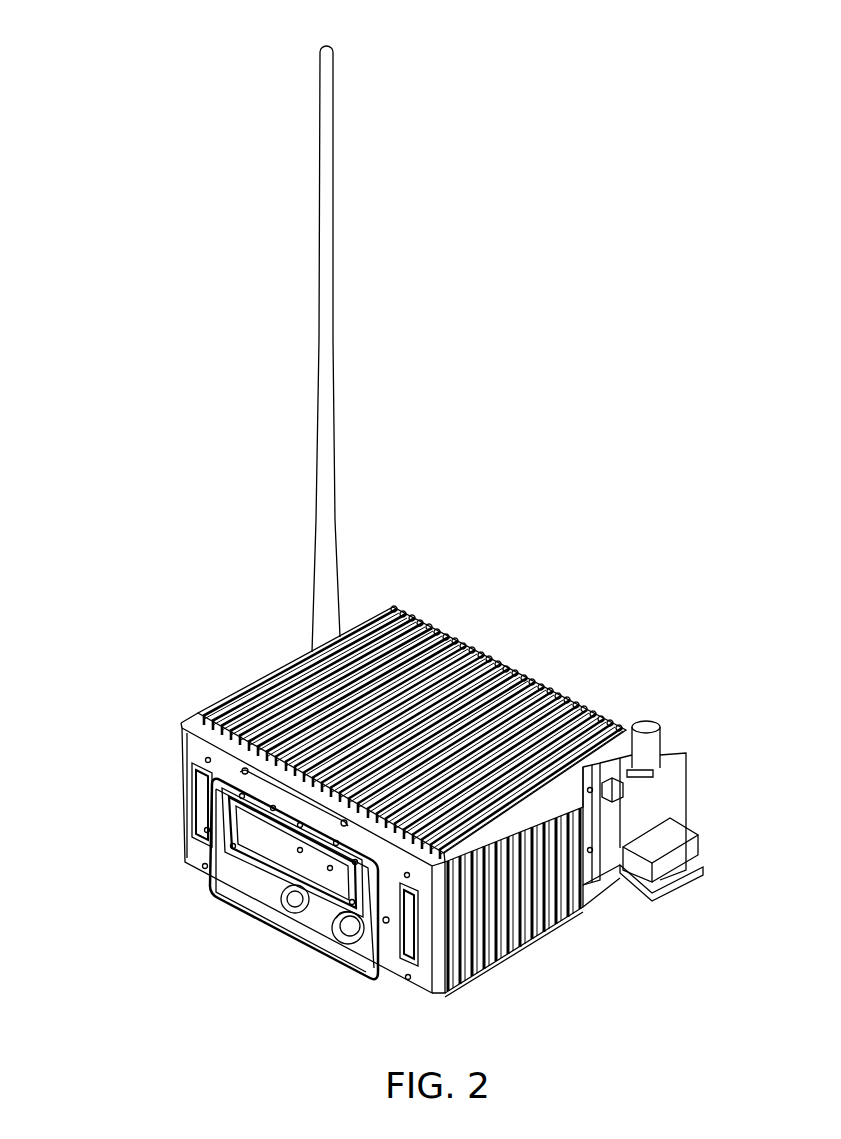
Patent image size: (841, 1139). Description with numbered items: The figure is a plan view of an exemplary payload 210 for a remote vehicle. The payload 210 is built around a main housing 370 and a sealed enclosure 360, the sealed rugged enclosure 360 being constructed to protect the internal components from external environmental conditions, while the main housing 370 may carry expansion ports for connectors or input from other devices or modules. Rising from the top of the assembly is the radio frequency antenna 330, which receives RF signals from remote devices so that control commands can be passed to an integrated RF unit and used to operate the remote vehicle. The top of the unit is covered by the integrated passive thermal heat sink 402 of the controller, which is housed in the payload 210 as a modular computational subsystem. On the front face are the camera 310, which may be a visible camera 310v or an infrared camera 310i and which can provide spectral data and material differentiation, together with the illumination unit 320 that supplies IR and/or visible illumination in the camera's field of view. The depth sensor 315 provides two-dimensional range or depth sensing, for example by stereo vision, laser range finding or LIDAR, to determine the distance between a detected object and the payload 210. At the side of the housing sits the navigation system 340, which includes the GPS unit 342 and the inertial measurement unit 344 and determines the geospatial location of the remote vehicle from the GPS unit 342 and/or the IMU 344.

The payload 210 is at (595, 46).
The radio frequency (RF) antenna 330 is at (330, 333).
The depth sensor 315 is at (260, 677).
The integrated passive thermal heat sink 402 is at (530, 667).
The sealed enclosure 360 is at (186, 718).
The illumination unit 320 is at (197, 800).
The camera 310 is at (239, 879).
The visible camera 310v is at (284, 897).
The infrared (IR) camera 310i is at (346, 930).
The main housing 370 is at (528, 940).
The global positioning system (GPS) unit 342 is at (647, 798).
The inertial measurement unit (IMU) 344 is at (678, 855).
The navigation system 340 is at (688, 893).